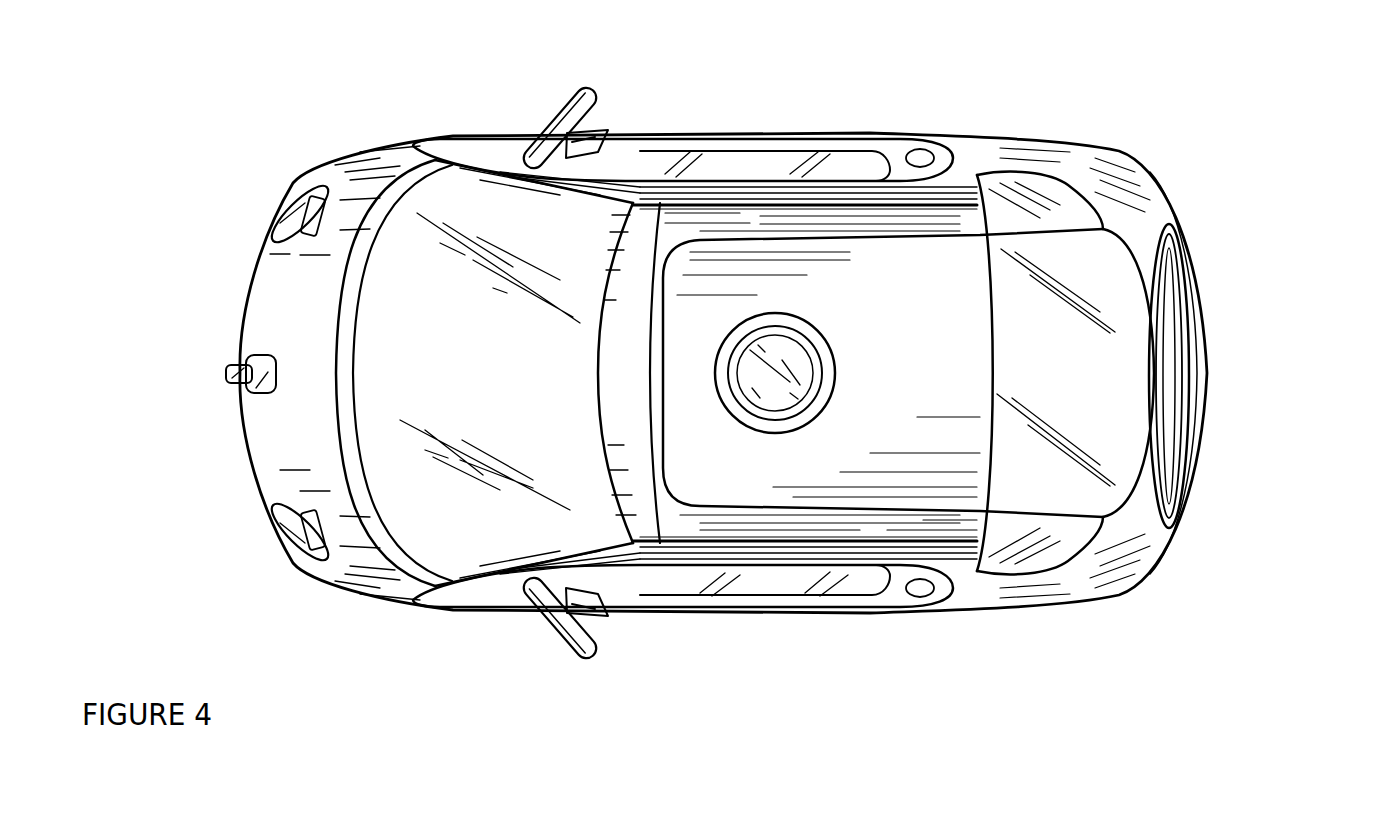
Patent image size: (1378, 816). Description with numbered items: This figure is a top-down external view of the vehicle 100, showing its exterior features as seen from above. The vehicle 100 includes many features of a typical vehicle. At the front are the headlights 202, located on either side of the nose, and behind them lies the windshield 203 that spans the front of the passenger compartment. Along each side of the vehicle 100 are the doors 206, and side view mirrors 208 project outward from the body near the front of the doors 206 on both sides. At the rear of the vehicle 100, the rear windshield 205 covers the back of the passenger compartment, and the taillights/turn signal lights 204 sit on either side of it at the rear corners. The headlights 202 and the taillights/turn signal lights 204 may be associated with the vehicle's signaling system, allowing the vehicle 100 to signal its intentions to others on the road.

The vehicle 100 is at (710, 608).
The headlights 202 is at (290, 198).
The windshield 203 is at (405, 253).
The taillights/turn signal lights 204 is at (1063, 215).
The rear windshield 205 is at (1134, 327).
The doors 206 is at (940, 142).
The side view mirrors 208 is at (590, 105).